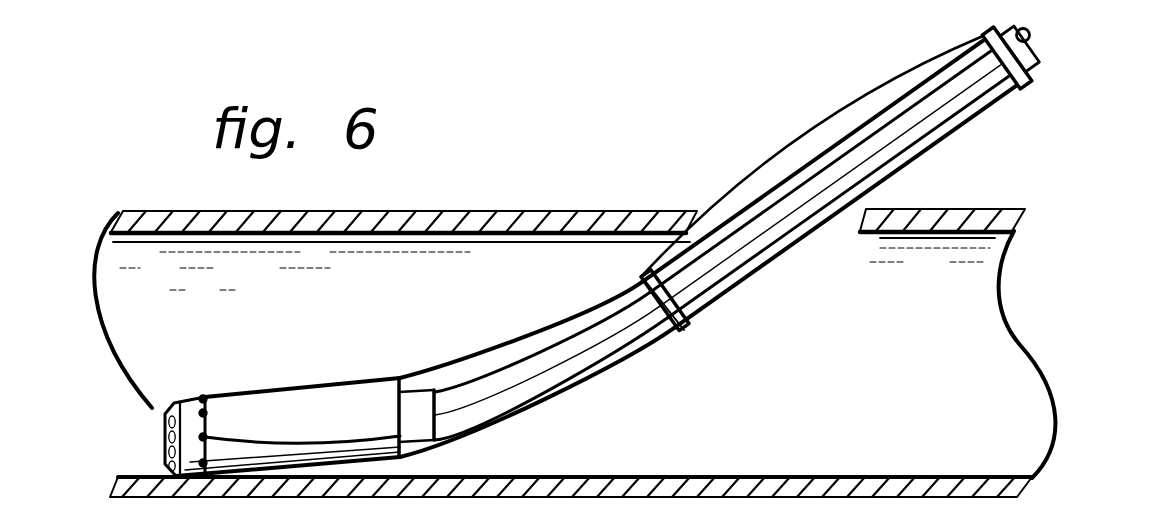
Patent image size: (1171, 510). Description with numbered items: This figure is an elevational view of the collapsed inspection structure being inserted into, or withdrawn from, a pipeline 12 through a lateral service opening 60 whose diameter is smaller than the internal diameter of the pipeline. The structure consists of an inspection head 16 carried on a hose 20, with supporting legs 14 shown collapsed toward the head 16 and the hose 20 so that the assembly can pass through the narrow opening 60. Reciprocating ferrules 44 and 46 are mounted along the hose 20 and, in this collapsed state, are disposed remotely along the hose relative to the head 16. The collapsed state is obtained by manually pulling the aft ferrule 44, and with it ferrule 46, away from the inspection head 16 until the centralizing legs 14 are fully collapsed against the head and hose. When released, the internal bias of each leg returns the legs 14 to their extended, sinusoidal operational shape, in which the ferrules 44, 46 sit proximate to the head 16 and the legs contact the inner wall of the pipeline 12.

The pipeline 12 is at (526, 210).
The supporting legs 14 is at (520, 380).
The inspection head 16 is at (338, 426).
The hose 20 is at (737, 253).
The aft ferrule 44 is at (1030, 80).
The ferrule 46 is at (682, 326).
The lateral service opening 60 is at (706, 205).